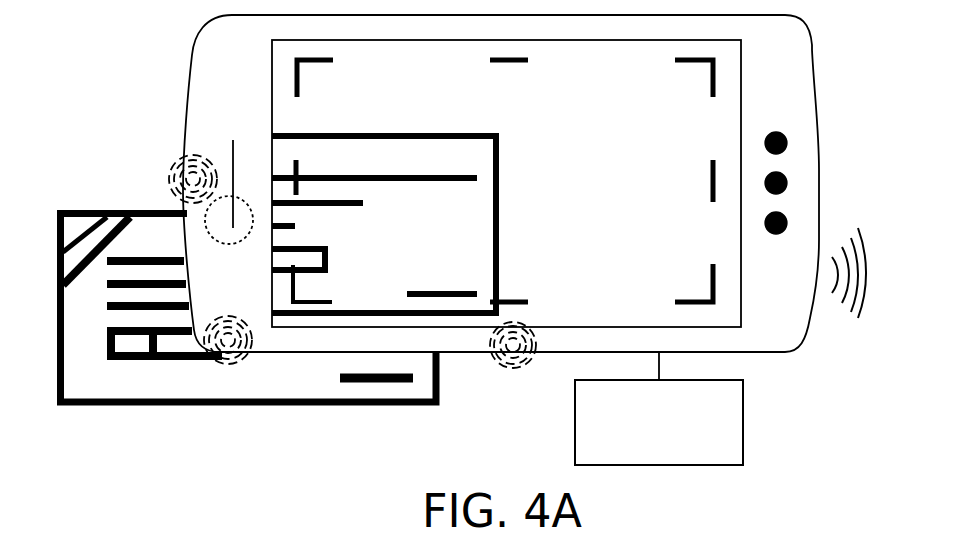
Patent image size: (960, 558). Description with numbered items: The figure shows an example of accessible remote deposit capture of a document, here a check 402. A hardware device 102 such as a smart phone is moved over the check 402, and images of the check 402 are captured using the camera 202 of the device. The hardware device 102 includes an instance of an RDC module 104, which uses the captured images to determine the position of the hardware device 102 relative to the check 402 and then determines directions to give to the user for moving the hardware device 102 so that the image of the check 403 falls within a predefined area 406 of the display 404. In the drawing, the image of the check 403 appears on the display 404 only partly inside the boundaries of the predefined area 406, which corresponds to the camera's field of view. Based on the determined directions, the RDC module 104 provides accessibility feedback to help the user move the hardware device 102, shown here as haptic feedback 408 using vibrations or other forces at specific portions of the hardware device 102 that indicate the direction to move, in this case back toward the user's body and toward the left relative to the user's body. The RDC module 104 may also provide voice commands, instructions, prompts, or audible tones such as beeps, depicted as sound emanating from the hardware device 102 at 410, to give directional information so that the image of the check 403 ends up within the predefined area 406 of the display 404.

The hardware device 102 is at (192, 48).
The RDC module 104 is at (641, 447).
The camera 202 is at (229, 244).
The check 402 is at (80, 210).
The image of the check 403 is at (500, 226).
The display 404 is at (272, 110).
The predefined area 406 is at (712, 76).
The haptic feedback 408 is at (513, 368).
The audio output 410 is at (867, 277).